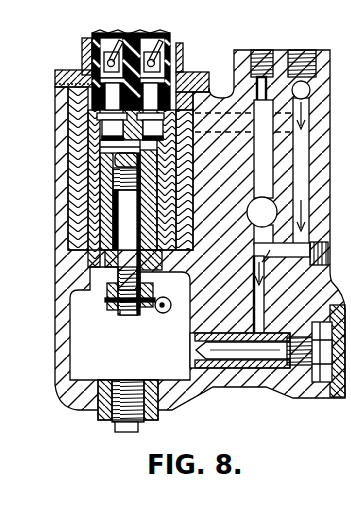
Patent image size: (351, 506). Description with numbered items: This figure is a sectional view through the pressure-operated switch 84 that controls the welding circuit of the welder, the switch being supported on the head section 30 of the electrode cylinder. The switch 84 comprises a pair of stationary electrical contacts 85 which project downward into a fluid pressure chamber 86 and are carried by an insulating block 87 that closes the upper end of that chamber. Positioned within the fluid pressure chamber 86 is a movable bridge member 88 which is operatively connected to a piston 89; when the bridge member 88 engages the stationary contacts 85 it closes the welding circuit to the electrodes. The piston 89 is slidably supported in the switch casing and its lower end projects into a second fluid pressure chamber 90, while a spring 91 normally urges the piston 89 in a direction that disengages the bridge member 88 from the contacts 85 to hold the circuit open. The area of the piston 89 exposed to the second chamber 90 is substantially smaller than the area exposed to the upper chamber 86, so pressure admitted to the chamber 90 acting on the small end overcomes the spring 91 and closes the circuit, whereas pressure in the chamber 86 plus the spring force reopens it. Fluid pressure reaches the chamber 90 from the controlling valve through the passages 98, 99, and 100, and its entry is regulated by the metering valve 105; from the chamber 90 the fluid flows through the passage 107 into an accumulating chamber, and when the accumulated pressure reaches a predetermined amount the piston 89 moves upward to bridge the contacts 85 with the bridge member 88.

The head section 30 is at (213, 389).
The switch 84 is at (132, 58).
The stationary electrical contacts 85 is at (170, 65).
The fluid pressure chamber 86 is at (95, 138).
The insulating block 87 is at (83, 62).
The movable bridge member 88 is at (107, 137).
The piston 89 is at (108, 195).
The second fluid pressure chamber 90 is at (80, 400).
The spring 91 is at (106, 263).
The passage 98 is at (305, 81).
The passage 99 is at (300, 167).
The passage 100 is at (174, 357).
The metering valve 105 is at (297, 388).
The passage 107 is at (125, 345).